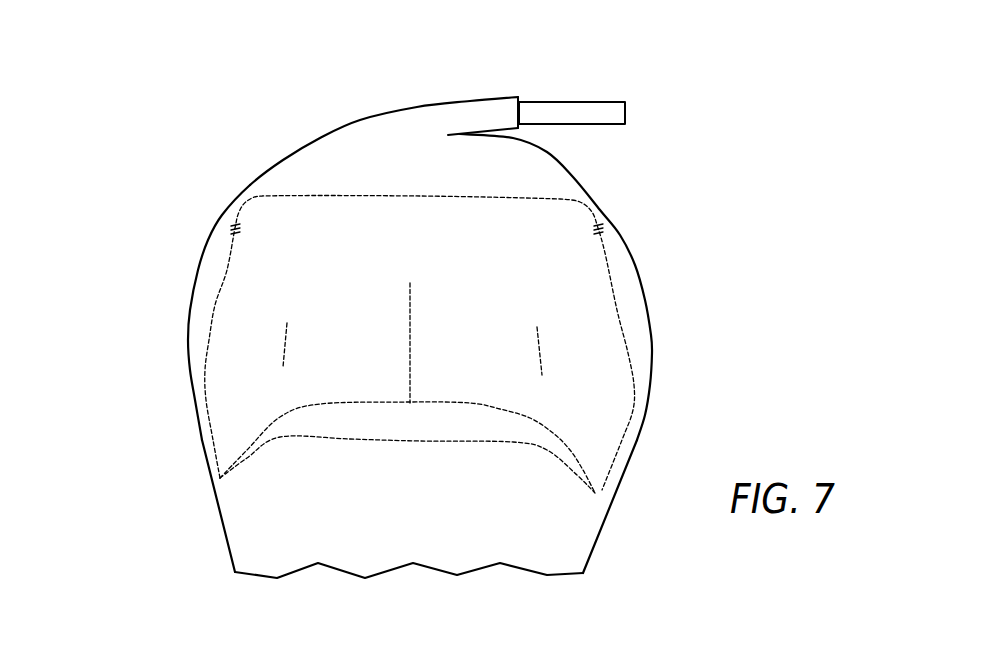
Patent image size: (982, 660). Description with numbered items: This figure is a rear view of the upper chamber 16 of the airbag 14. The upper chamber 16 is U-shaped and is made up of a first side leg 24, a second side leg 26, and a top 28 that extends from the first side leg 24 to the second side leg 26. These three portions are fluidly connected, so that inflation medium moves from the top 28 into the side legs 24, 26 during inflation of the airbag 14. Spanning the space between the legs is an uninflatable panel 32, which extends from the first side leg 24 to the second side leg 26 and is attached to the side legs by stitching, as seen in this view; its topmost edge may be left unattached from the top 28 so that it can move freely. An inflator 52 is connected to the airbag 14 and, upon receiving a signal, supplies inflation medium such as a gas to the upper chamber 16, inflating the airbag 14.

The airbag 14 is at (421, 308).
The upper chamber 16 is at (600, 255).
The first side leg 24 is at (648, 308).
The second side leg 26 is at (198, 270).
The top 28 is at (395, 135).
The uninflatable panel 32 is at (337, 355).
The inflator 52 is at (598, 101).